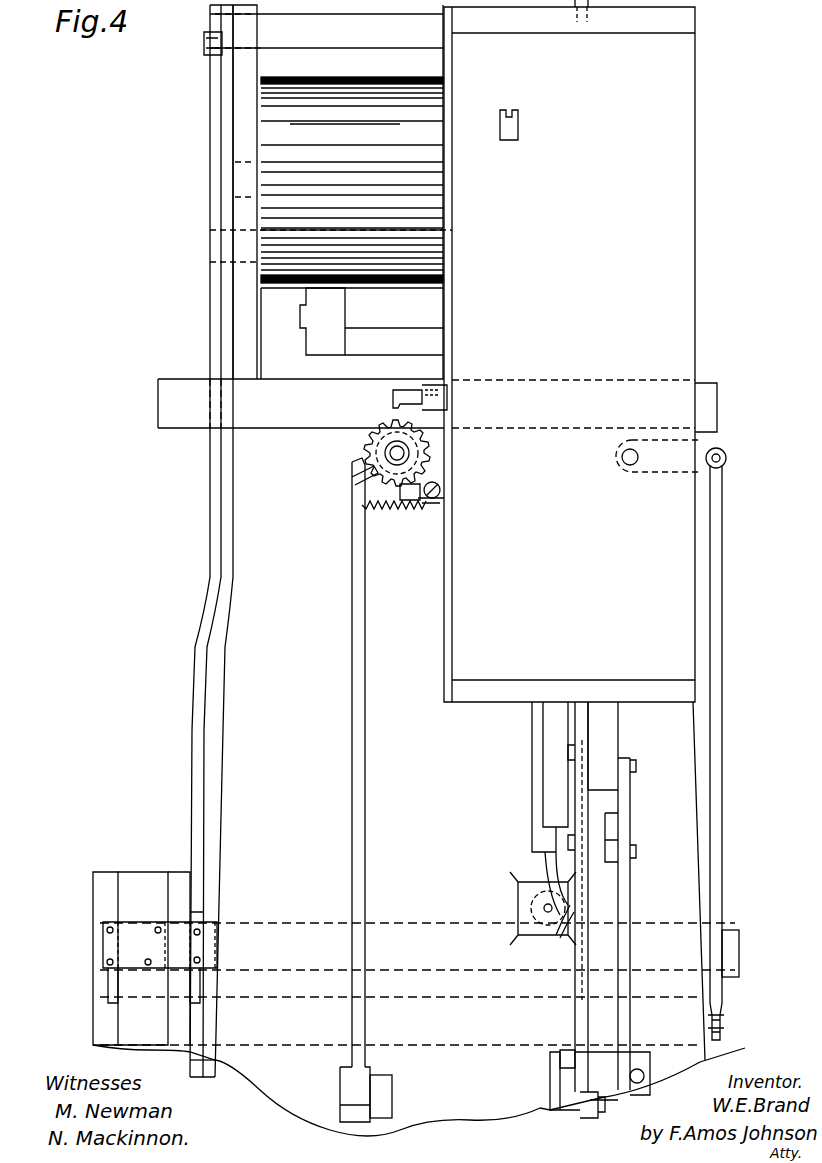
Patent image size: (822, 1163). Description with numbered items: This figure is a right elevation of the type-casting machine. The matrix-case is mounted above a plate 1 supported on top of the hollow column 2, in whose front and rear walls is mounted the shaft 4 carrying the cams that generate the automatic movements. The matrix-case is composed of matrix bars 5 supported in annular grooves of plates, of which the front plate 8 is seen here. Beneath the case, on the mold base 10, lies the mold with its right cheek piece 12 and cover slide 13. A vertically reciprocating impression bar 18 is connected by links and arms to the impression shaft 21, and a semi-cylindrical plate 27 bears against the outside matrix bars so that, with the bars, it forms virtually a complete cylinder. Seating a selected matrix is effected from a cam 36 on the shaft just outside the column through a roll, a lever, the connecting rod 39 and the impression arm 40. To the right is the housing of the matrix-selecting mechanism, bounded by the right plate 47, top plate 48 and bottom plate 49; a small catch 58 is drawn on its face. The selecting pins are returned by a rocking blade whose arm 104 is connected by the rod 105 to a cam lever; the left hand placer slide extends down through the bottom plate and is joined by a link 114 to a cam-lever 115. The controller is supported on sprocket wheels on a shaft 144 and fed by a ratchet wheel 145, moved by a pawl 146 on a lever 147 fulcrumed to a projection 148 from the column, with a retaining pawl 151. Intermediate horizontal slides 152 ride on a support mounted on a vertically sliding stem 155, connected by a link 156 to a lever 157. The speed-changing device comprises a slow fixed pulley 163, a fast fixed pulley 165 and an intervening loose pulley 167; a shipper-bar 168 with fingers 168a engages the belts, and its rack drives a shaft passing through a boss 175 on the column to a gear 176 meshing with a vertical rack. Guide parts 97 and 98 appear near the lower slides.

The plate 1 is at (437, 405).
The column 2 is at (263, 523).
The shaft 4 is at (92, 1020).
The matrix bars 5 is at (272, 262).
The front plate 8 is at (331, 192).
The mold base 10 is at (352, 192).
The right cheek piece 12 is at (394, 338).
The cover slide 13 is at (322, 321).
The impression bar 18 is at (228, 244).
The shaft 21 is at (350, 31).
The semi-cylindrical plate 27 is at (352, 180).
The cam 36 is at (214, 1076).
The connecting rod 39 is at (212, 122).
The impression arm 40 is at (228, 52).
The right plate 47 is at (569, 351).
The top plate 48 is at (573, 19).
The bottom plate 49 is at (578, 869).
The catch 58 is at (512, 125).
The guide rod 97 is at (578, 968).
The collar 98 is at (564, 1050).
The arm 104 is at (708, 452).
The rod 105 is at (720, 818).
The link 114 is at (622, 915).
The cam-lever 115 is at (642, 1076).
The shaft 144 is at (432, 467).
The ratchet wheel 145 is at (368, 438).
The pawl 146 is at (355, 553).
The lever 147 is at (360, 1092).
The projection 148 is at (380, 1098).
The retaining pawl 151 is at (410, 503).
The horizontal slides 152 is at (393, 394).
The vertically sliding stem 155 is at (540, 730).
The link 156 is at (576, 1098).
The lever 157 is at (598, 1112).
The fixed pulley 163 is at (105, 872).
The fixed pulley 165 is at (182, 873).
The loose pulley 167 is at (143, 958).
The shipper-bar 168 is at (750, 948).
The fingers 168a is at (196, 985).
The boss 175 is at (518, 893).
The gear 176 is at (560, 938).